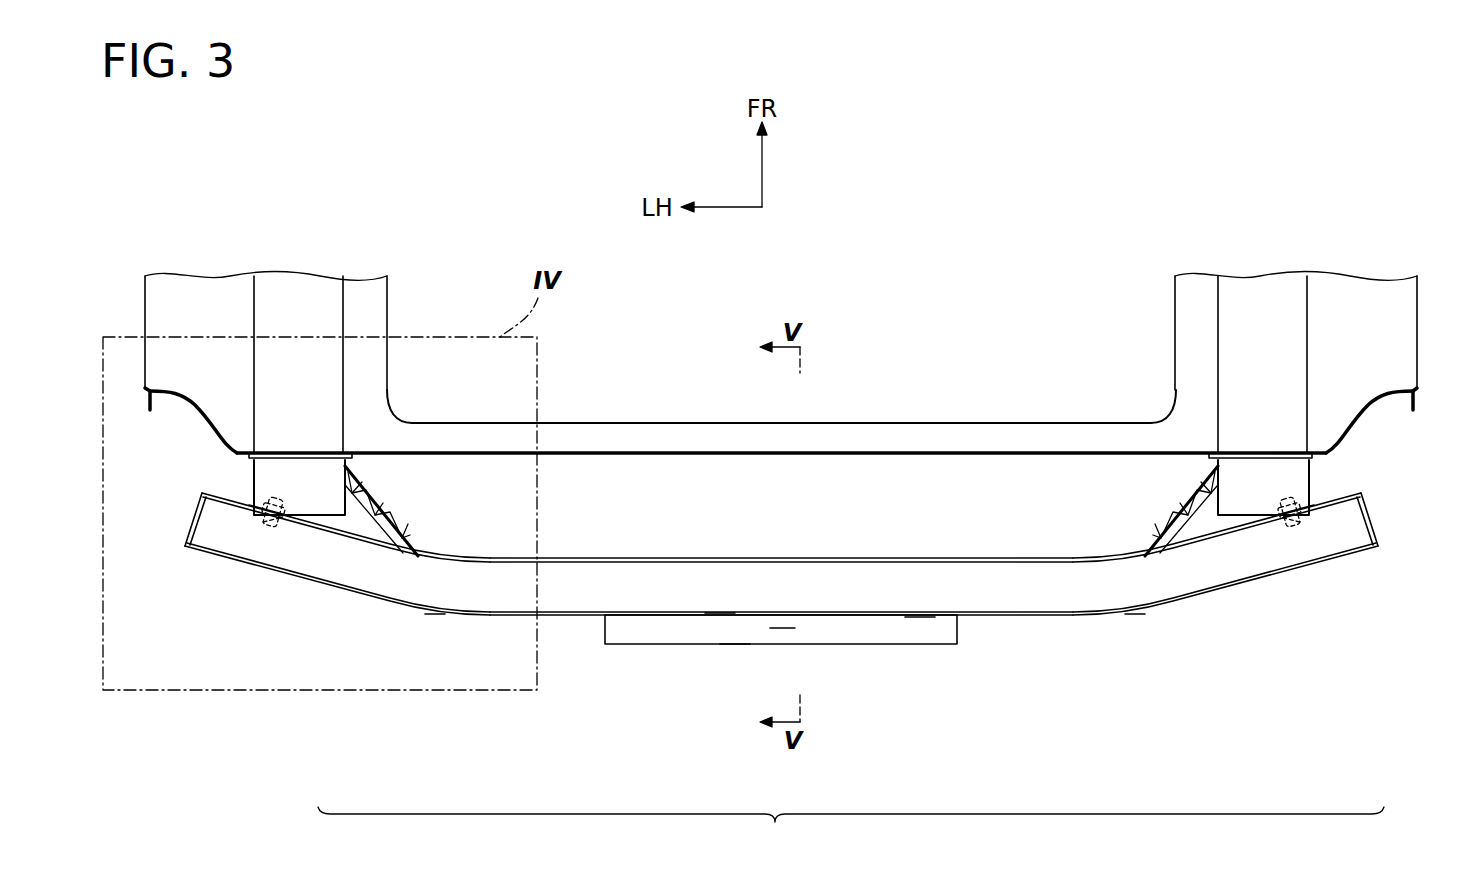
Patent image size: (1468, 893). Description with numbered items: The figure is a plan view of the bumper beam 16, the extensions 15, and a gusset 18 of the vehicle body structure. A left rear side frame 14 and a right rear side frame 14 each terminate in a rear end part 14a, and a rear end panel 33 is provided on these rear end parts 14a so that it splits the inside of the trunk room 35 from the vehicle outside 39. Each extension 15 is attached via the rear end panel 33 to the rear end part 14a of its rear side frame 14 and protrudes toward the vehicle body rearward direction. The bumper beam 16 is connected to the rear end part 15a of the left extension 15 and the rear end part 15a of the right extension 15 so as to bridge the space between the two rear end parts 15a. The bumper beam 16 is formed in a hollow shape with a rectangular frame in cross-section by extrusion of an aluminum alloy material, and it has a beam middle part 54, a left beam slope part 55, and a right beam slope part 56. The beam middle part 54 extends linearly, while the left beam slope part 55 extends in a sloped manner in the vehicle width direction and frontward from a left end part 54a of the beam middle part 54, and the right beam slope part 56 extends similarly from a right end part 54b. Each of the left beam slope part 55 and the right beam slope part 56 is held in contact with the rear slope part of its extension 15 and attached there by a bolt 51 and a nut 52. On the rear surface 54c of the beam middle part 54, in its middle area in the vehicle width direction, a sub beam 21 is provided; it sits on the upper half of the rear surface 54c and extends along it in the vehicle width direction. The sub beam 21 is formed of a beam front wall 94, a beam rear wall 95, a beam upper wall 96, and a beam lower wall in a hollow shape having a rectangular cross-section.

The rear side frame 14 is at (345, 322).
The rear end part of rear side frame 14a is at (328, 443).
The extension 15 is at (324, 500).
The rear end part of extension 15a is at (263, 503).
The bumper beam 16 is at (851, 832).
The gusset 18 is at (392, 527).
The sub beam 21 is at (872, 656).
The rear end panel 33 is at (963, 458).
The trunk room 35 is at (680, 300).
The vehicle outside 39 is at (663, 747).
The bolt 51 is at (267, 528).
The nut 52 is at (273, 500).
The beam middle part 54 is at (657, 602).
The left end part of beam middle part 54a is at (433, 613).
The right end part of beam middle part 54b is at (1137, 615).
The rear surface of beam middle part 54c is at (920, 618).
The left beam slope part 55 is at (347, 592).
The right beam slope part 56 is at (1223, 590).
The beam front wall 94 is at (720, 613).
The beam rear wall 95 is at (733, 644).
The beam upper wall 96 is at (782, 627).